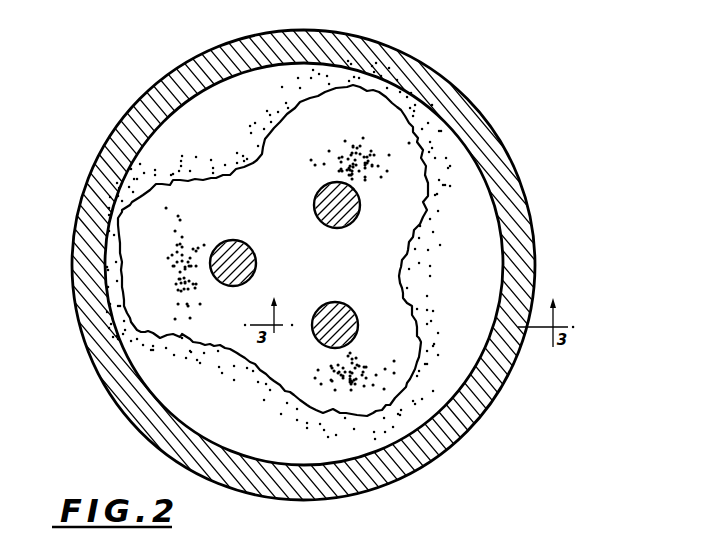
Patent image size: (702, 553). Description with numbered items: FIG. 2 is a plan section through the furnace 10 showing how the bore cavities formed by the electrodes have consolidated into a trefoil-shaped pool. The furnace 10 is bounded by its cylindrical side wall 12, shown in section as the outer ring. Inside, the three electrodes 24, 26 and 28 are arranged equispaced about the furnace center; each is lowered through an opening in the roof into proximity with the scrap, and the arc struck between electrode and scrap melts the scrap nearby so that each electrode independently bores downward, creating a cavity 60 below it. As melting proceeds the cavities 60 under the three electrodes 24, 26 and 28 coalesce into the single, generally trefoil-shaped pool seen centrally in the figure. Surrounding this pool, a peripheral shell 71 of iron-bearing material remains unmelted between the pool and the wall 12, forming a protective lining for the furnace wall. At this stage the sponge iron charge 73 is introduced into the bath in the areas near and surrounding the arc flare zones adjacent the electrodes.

The furnace 10 is at (122, 70).
The cylindrical side wall 12 is at (102, 148).
The electrode 24 is at (236, 242).
The electrode 26 is at (334, 303).
The electrode 28 is at (322, 189).
The cavity 60 is at (395, 128).
The peripheral shell 71 is at (458, 205).
The sponge iron charge 73 is at (358, 148).